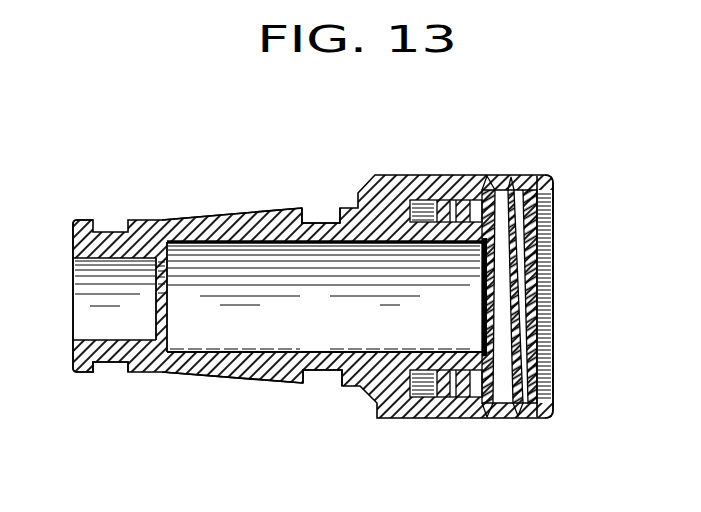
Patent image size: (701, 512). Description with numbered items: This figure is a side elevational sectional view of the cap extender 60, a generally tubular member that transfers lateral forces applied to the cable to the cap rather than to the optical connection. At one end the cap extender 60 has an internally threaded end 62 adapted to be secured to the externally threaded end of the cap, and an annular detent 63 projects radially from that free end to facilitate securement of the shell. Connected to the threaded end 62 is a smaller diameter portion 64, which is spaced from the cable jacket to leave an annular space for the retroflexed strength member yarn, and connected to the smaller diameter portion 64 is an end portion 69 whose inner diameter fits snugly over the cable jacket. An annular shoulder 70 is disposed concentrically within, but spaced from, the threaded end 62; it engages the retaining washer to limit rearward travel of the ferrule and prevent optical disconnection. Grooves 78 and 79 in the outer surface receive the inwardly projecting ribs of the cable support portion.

The cap extender 60 is at (311, 296).
The internally threaded end 62 is at (522, 362).
The annular detent 63 is at (537, 168).
The smaller diameter portion 64 is at (232, 382).
The end portion 69 is at (68, 367).
The annular shoulder 70 is at (482, 364).
The groove 78 is at (118, 368).
The groove 79 is at (322, 375).